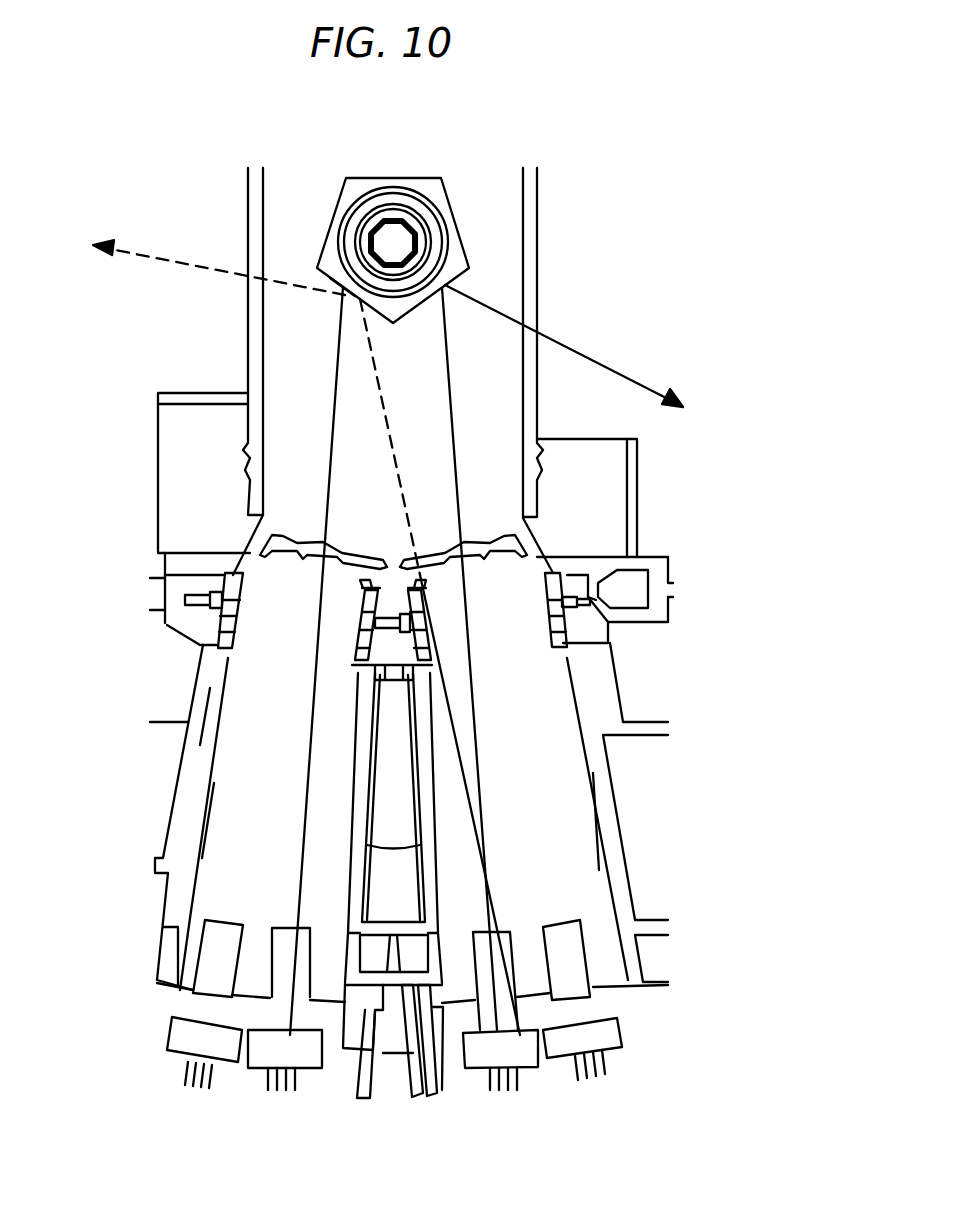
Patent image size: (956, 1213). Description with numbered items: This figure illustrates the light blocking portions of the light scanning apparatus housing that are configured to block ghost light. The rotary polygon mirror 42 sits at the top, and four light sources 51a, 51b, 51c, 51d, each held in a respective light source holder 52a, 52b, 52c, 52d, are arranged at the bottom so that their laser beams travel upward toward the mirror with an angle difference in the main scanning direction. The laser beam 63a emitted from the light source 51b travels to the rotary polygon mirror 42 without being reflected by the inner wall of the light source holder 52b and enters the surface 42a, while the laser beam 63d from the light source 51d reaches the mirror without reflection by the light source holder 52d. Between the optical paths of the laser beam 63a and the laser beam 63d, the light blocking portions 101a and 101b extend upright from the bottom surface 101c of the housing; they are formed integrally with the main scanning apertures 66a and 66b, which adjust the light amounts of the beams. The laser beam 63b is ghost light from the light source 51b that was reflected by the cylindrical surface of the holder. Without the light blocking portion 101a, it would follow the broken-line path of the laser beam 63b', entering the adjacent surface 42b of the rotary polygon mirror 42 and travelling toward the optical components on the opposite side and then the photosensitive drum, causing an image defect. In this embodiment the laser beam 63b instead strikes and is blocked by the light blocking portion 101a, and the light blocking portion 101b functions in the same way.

The rotary polygon mirror 42 is at (397, 177).
The surface of the rotary polygon mirror 42a is at (460, 283).
The surface of the rotary polygon mirror 42b is at (337, 280).
The laser beam 63a is at (462, 438).
The laser beam (ghost light) 63b is at (463, 667).
The laser beam 63b' is at (219, 233).
The laser beam 63d is at (300, 862).
The main scanning aperture 66a is at (483, 538).
The main scanning aperture 66b is at (290, 537).
The light blocking portion 101a is at (437, 568).
The light blocking portion 101b is at (363, 567).
The bottom surface of the housing 101c is at (388, 526).
The light source 51a is at (600, 1083).
The light source 51b is at (500, 1096).
The light source 51c is at (183, 1082).
The light source 51d is at (307, 1088).
The light source holder 52a is at (603, 1040).
The light source holder 52b is at (520, 1052).
The light source holder 52c is at (175, 1040).
The light source holder 52d is at (265, 1052).